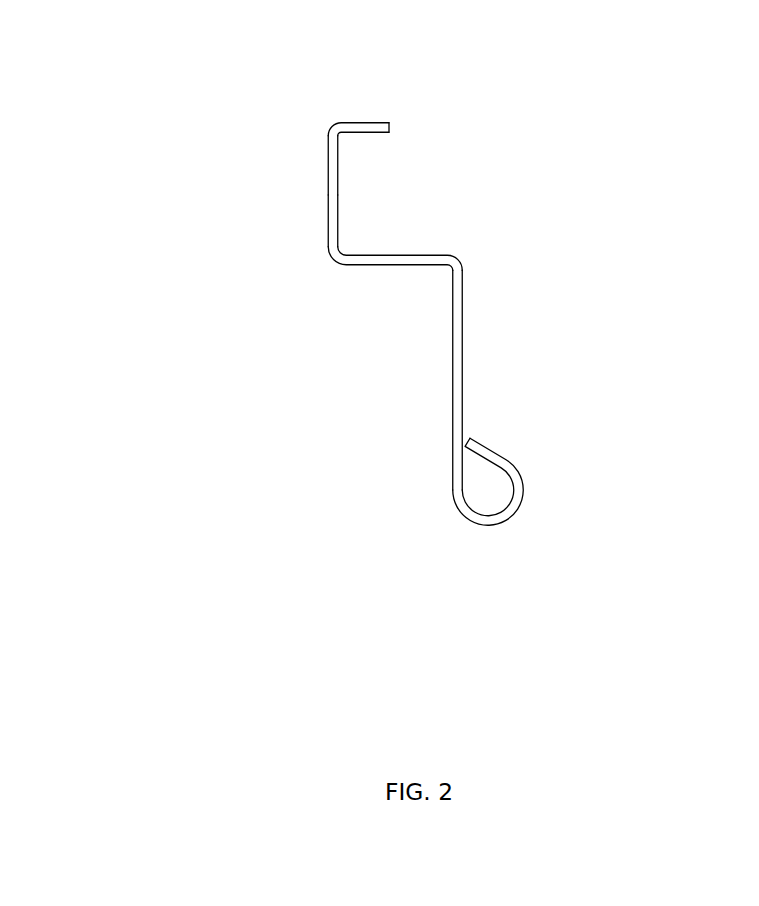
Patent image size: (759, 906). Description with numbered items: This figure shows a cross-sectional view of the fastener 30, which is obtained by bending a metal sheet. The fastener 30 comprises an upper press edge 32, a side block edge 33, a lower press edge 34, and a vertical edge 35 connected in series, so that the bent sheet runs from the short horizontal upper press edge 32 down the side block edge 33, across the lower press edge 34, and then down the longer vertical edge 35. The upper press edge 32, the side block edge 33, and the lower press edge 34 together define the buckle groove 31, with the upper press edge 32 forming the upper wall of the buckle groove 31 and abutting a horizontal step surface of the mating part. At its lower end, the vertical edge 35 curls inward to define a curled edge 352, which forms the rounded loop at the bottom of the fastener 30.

The fastener 30 is at (404, 293).
The buckle groove 31 is at (367, 182).
The upper press edge 32 is at (372, 127).
The side block edge 33 is at (337, 195).
The lower press edge 34 is at (392, 265).
The vertical edge 35 is at (457, 387).
The curled edge 352 is at (522, 495).